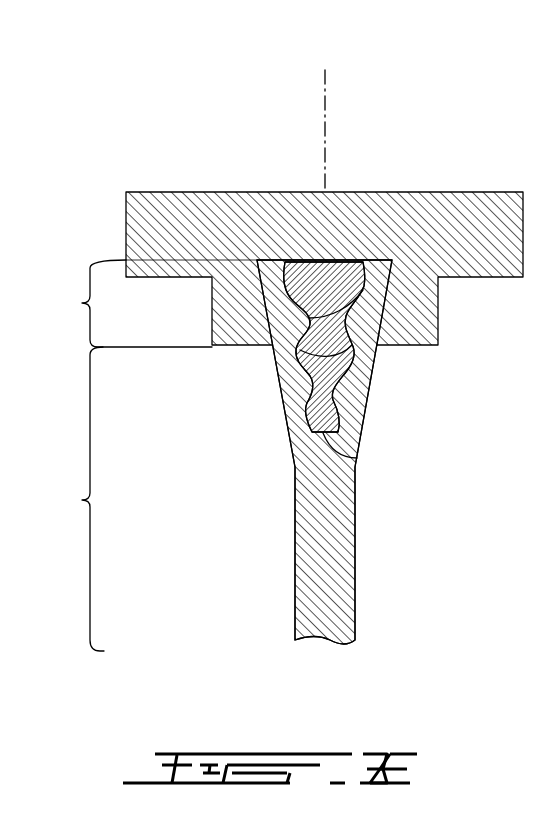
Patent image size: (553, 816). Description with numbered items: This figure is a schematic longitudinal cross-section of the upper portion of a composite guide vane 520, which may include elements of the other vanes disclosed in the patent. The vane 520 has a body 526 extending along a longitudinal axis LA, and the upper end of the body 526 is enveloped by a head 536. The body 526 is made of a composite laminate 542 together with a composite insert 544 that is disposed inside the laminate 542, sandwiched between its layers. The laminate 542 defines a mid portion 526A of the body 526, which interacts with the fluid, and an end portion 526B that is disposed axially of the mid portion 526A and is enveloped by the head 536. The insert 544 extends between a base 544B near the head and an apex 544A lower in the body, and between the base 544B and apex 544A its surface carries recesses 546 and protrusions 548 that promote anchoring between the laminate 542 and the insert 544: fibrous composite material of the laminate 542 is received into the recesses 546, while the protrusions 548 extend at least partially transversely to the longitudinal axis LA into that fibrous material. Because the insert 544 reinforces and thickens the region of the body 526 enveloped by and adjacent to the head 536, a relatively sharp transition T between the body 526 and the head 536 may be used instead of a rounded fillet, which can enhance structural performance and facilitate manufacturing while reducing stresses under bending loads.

The vane 520 is at (217, 120).
The head 536 is at (155, 204).
The longitudinal axis LA is at (325, 88).
The body 526 is at (268, 565).
The mid portion 526A is at (185, 498).
The end portion 526B is at (226, 303).
The laminate 542 is at (320, 462).
The insert 544 is at (322, 357).
The apex 544A is at (357, 458).
The base 544B is at (340, 261).
The recess 546 is at (348, 321).
The protrusion 548 is at (373, 368).
The transition T is at (388, 348).